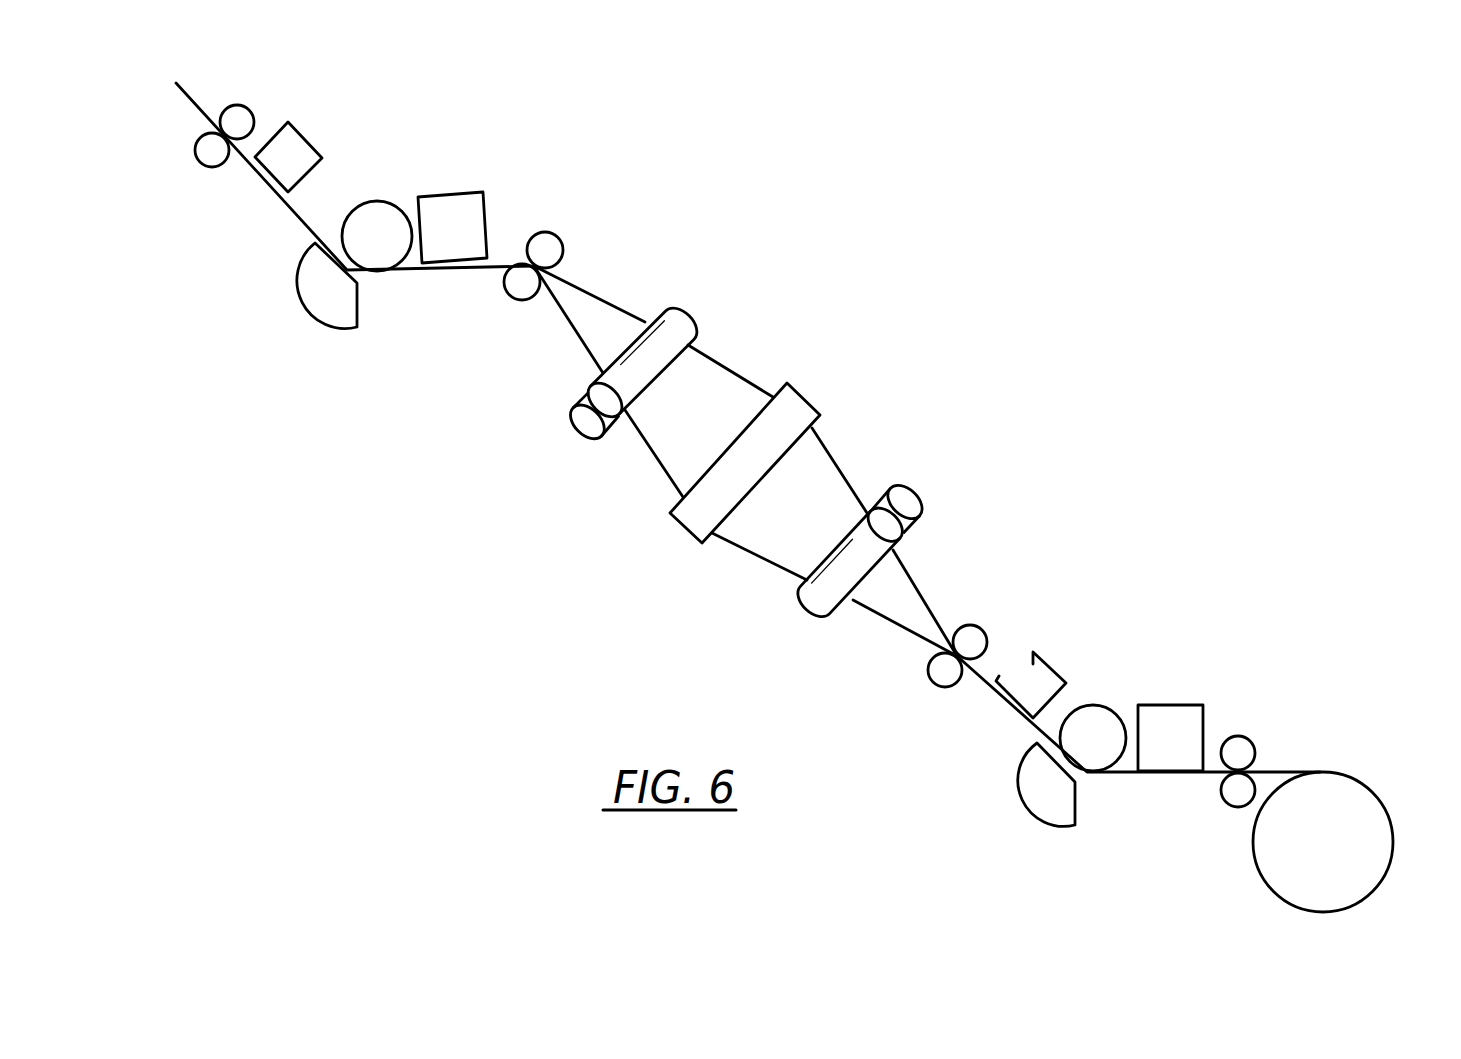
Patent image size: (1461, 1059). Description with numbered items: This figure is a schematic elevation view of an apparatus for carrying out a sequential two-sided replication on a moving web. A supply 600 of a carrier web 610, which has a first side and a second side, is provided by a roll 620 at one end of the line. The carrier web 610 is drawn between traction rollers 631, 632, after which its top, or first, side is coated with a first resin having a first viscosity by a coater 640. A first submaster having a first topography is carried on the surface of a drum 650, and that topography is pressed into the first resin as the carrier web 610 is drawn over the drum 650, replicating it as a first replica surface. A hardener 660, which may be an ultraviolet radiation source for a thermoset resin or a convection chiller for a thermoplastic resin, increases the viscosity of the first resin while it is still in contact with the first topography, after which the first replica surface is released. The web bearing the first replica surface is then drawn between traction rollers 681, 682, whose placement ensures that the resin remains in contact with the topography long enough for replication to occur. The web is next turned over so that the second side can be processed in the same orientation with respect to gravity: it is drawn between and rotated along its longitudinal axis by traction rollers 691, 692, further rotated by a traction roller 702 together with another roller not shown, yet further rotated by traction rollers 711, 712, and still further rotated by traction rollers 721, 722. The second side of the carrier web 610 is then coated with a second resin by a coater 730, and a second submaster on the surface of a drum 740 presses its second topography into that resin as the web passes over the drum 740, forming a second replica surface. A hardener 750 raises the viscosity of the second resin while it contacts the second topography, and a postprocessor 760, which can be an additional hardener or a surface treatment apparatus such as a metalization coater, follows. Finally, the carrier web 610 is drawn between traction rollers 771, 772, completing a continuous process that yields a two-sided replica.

The supply 600 is at (1320, 835).
The carrier web 610 is at (1275, 770).
The roll 620 is at (1280, 878).
The traction roller 631 is at (1242, 742).
The traction roller 632 is at (1238, 800).
The coater 640 is at (1192, 705).
The drum 650 is at (1100, 713).
The hardener 660 is at (1030, 795).
The traction roller 681 is at (982, 639).
The traction roller 682 is at (943, 682).
The traction roller 691 is at (906, 497).
The traction roller 692 is at (820, 608).
The traction roller 702 is at (796, 400).
The traction roller 711 is at (580, 423).
The traction roller 712 is at (678, 318).
The traction roller 721 is at (514, 291).
The traction roller 722 is at (559, 243).
The coater 730 is at (452, 197).
The drum 740 is at (383, 184).
The hardener 750 is at (332, 310).
The postprocessor 760 is at (304, 139).
The traction roller 771 is at (200, 150).
The traction roller 772 is at (244, 109).